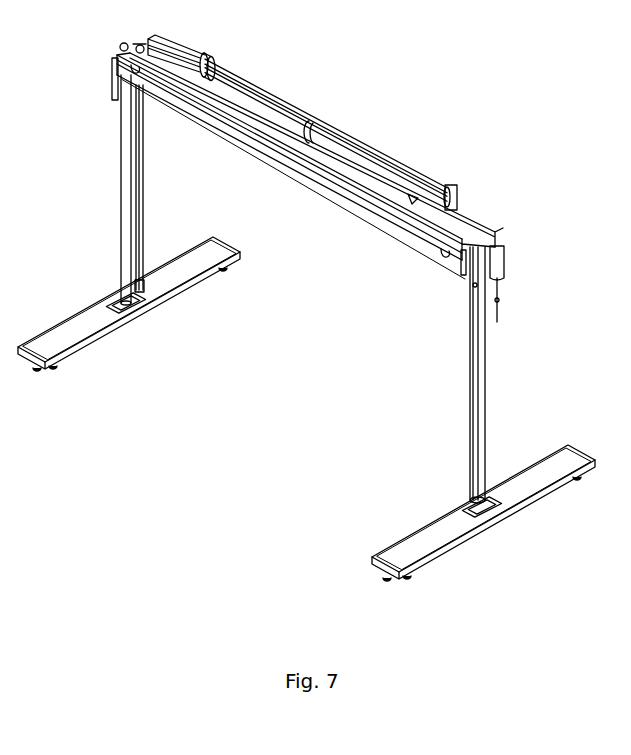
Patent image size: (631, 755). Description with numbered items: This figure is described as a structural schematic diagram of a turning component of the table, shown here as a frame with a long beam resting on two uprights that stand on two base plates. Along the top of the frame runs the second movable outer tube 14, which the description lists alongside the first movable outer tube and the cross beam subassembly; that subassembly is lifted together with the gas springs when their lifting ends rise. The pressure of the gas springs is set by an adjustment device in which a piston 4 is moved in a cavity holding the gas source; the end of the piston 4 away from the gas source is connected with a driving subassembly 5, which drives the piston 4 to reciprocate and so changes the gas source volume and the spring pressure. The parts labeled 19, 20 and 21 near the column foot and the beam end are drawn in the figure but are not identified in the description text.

The piston 4 is at (476, 474).
The driving subassembly 5 is at (480, 498).
The second movable outer tube 14 is at (150, 39).
The base plate 19 is at (506, 486).
The guide block 20 is at (141, 46).
The sliding seat 21 is at (126, 44).